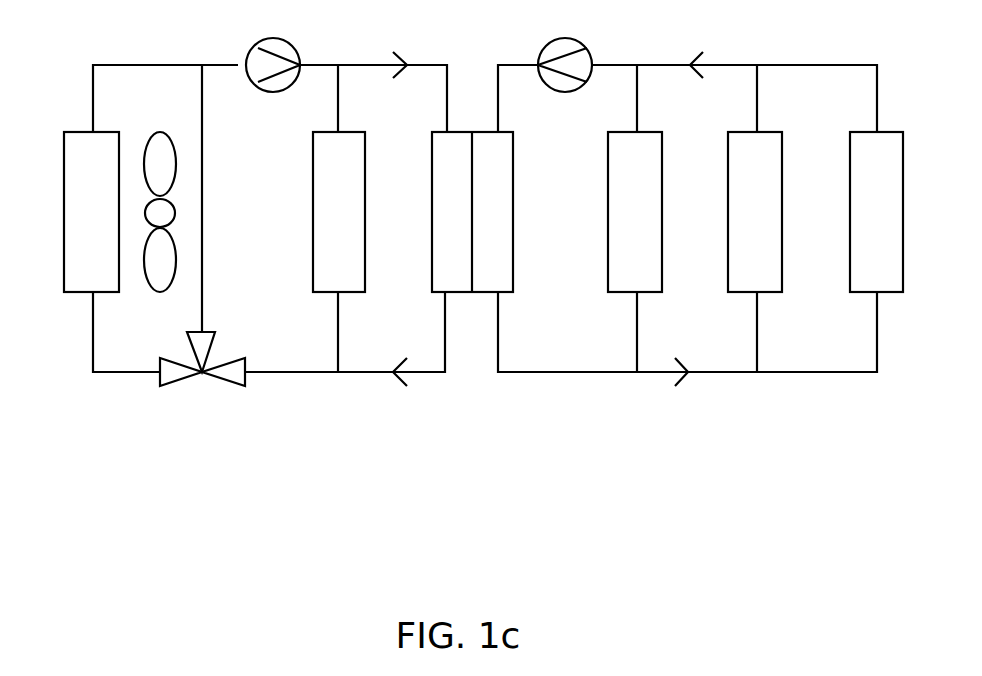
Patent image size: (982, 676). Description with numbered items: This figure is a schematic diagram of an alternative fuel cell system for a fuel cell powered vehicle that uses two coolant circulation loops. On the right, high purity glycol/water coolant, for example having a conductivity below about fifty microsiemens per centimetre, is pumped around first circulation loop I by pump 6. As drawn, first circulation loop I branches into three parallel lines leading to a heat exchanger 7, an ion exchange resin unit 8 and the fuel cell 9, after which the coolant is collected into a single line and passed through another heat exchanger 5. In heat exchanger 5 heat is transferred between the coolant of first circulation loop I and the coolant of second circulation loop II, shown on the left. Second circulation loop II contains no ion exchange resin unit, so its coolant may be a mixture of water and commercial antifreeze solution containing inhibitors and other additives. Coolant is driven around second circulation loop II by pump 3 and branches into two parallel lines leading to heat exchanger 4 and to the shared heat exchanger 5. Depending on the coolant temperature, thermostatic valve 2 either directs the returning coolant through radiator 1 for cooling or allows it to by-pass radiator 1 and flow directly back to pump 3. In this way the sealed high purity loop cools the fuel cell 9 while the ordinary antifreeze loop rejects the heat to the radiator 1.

The radiator 1 is at (93, 160).
The thermostatic valve 2 is at (207, 373).
The pump 3 is at (295, 40).
The heat exchanger 4 is at (340, 198).
The heat exchanger 5 is at (462, 198).
The pump 6 is at (588, 42).
The heat exchanger 7 is at (637, 198).
The ion exchange resin unit 8 is at (758, 198).
The fuel cell 9 is at (877, 198).
The first circulation loop I is at (847, 63).
The second circulation loop II is at (120, 63).